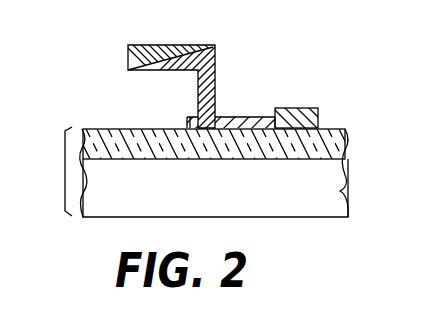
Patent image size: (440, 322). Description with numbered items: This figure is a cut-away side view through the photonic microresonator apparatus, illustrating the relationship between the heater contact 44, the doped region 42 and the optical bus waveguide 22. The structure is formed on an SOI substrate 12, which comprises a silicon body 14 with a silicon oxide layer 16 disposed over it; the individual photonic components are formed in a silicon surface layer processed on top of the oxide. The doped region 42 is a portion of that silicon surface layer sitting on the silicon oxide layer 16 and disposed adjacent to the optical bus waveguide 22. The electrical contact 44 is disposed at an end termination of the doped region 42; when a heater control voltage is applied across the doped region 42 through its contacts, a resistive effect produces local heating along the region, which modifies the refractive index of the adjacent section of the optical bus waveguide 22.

The SOI substrate 12 is at (211, 172).
The silicon body 14 is at (340, 191).
The silicon oxide layer 16 is at (345, 139).
The optical bus waveguide 22 is at (297, 108).
The doped region 42 is at (242, 117).
The electrical contact 44 is at (215, 52).